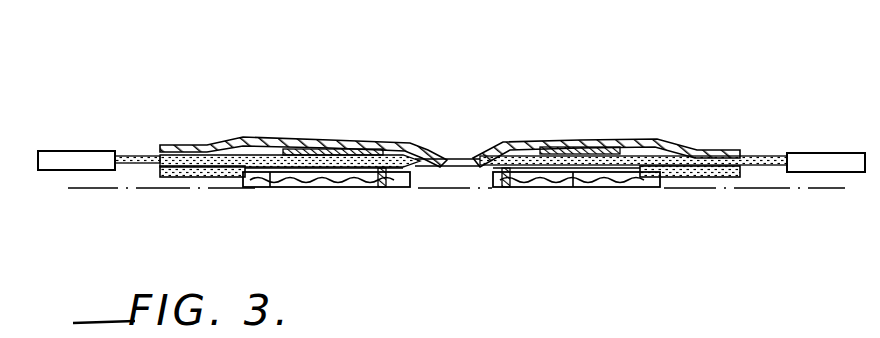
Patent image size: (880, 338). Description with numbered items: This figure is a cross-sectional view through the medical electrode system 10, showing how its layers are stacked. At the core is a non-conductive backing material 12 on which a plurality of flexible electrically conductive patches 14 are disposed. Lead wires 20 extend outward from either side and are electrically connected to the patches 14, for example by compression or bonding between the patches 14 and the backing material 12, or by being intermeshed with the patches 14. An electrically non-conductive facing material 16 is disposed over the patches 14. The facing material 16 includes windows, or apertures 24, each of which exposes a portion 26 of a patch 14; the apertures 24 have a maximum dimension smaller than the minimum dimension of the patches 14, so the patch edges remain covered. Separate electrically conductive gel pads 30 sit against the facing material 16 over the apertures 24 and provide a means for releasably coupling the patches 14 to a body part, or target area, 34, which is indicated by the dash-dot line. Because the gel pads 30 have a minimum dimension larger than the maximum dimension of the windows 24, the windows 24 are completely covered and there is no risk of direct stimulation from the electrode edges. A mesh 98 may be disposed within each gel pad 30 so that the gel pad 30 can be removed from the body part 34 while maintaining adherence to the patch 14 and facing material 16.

The medical electrode system 10 is at (178, 120).
The non-conductive backing material 12 is at (643, 145).
The flexible electrically conductive patches 14 is at (357, 150).
The electrically non-conductive facing material 16 is at (698, 178).
The lead wires 20 is at (86, 142).
The apertures 24 is at (270, 172).
The exposed portion of the patches 26 is at (293, 175).
The electrically conductive gel pads 30 is at (330, 183).
The body part 34 is at (140, 186).
The mesh 98 is at (380, 180).